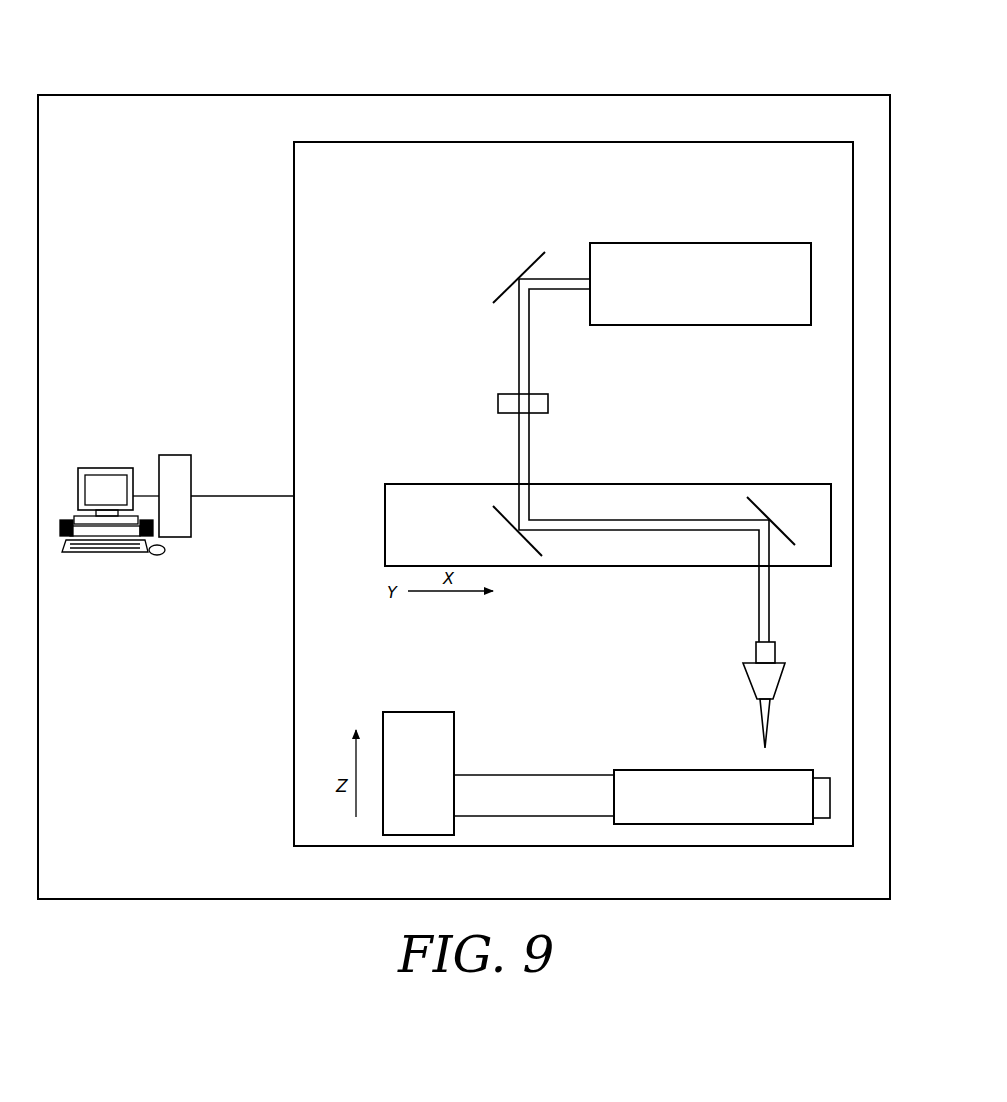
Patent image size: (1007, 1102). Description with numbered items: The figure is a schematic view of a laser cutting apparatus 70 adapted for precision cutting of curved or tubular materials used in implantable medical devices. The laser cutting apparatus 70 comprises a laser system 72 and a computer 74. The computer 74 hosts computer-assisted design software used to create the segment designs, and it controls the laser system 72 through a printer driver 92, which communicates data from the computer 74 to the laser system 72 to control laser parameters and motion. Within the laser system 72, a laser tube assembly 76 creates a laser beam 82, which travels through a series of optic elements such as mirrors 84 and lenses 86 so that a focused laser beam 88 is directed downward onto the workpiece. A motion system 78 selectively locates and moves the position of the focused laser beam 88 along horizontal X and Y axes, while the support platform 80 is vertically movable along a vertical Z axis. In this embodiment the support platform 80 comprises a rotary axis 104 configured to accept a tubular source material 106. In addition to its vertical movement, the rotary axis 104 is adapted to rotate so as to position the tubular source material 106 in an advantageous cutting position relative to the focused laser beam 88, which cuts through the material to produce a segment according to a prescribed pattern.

The laser cutting apparatus 70 is at (218, 95).
The laser system 72 is at (293, 258).
The computer 74 is at (108, 462).
The laser tube assembly 76 is at (766, 325).
The motion system 78 is at (615, 568).
The support platform 80 is at (497, 762).
The laser beam 82 is at (517, 337).
The mirrors 84 is at (505, 285).
The lenses 86 is at (765, 683).
The focused laser beam 88 is at (763, 723).
The printer driver 92 is at (177, 455).
The rotary axis 104 is at (505, 817).
The tubular source material 106 is at (650, 769).